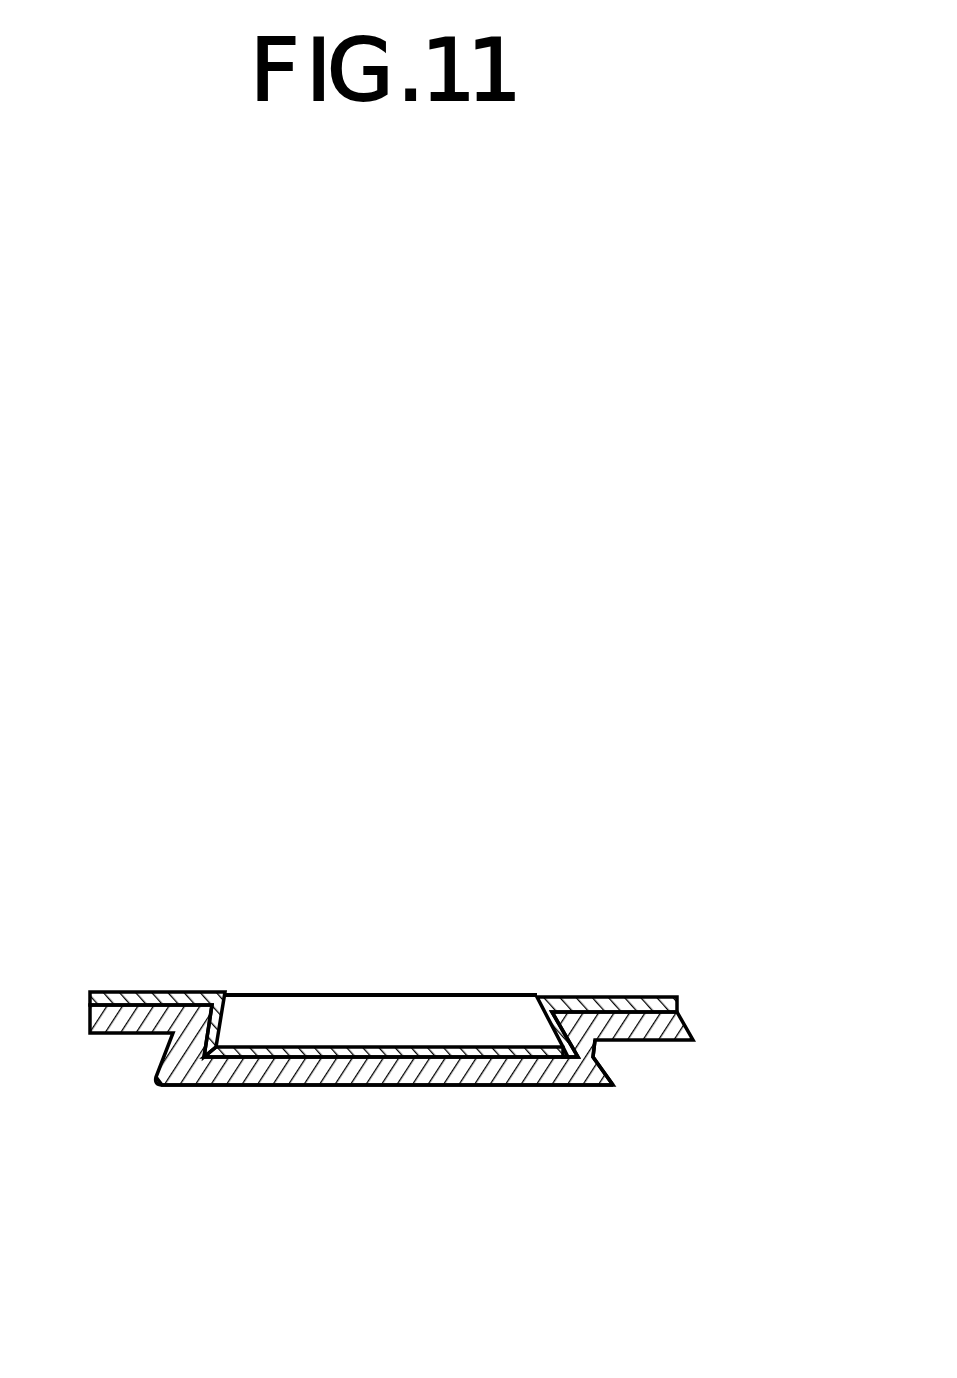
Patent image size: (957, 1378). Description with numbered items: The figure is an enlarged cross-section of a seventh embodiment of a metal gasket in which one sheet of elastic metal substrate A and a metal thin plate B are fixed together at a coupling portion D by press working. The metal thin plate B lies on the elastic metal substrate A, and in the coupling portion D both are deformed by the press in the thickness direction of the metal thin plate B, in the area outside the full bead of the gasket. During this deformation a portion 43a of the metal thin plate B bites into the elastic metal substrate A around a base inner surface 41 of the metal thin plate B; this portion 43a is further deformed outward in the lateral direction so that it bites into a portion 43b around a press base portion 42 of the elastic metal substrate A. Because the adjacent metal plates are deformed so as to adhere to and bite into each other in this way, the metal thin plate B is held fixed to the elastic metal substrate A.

The elastic metal substrate A is at (122, 1033).
The metal thin plate B is at (147, 987).
The coupling portion D is at (318, 989).
The base inner surface 41 is at (408, 1047).
The press base portion 42 is at (416, 1087).
The biting portion 43a is at (558, 1033).
The bitten portion 43b is at (612, 1082).